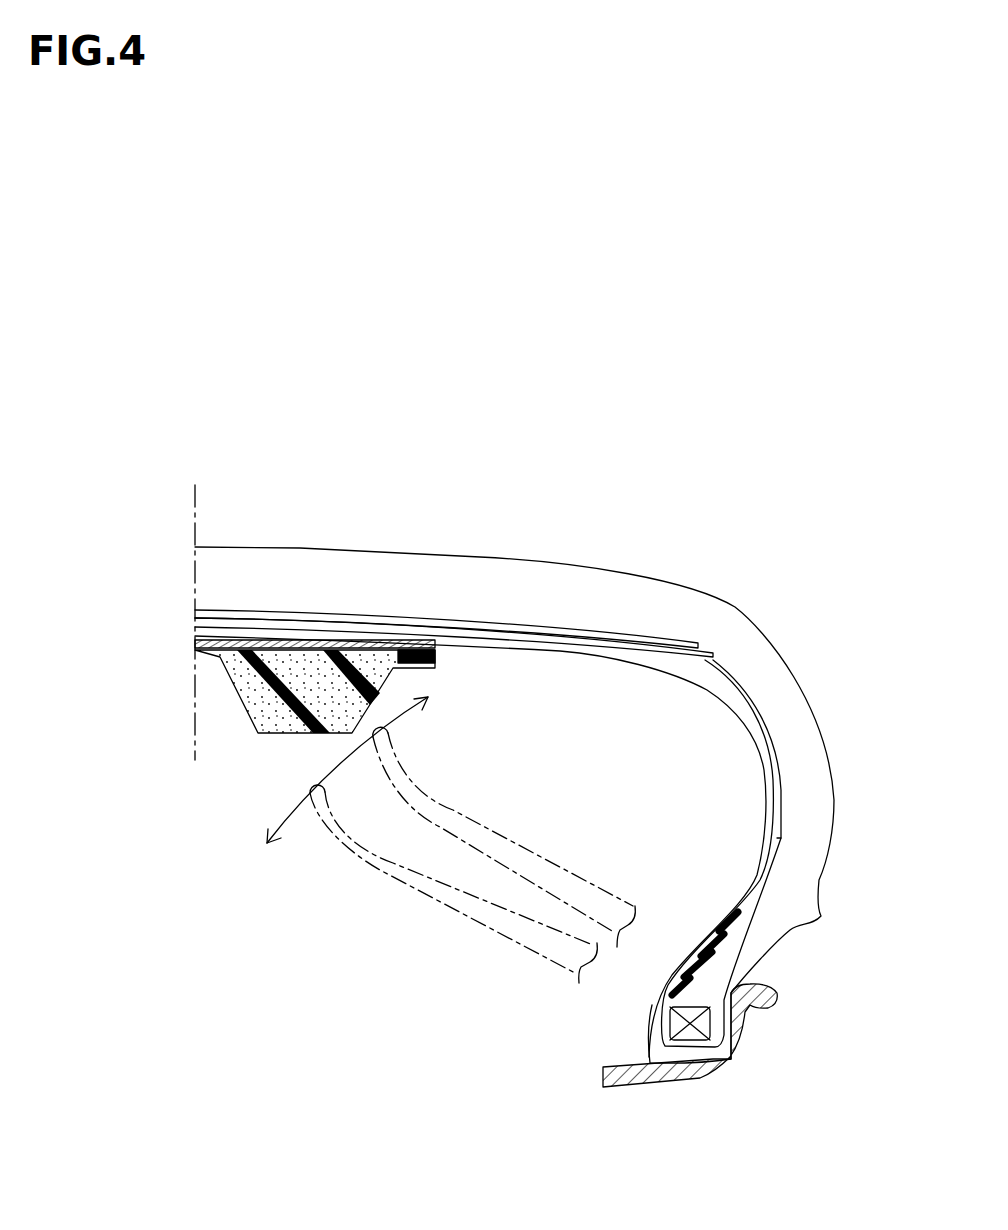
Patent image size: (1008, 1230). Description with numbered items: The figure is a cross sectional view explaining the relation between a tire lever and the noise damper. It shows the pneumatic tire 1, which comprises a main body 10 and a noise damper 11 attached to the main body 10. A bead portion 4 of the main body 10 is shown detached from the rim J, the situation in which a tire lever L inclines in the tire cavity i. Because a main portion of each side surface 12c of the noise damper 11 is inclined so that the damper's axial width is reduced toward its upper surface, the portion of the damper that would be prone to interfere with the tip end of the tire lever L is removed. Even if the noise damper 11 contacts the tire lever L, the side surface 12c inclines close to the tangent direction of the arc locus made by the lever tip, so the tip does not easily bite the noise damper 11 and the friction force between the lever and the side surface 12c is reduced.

The pneumatic tire 1 is at (698, 545).
The main body 10 is at (820, 725).
The noise damper 11 is at (240, 698).
The side surface 12c is at (397, 680).
The bead portion 4 is at (650, 1023).
The rim J is at (733, 1060).
The tire lever L is at (413, 893).
The tire cavity i is at (248, 923).